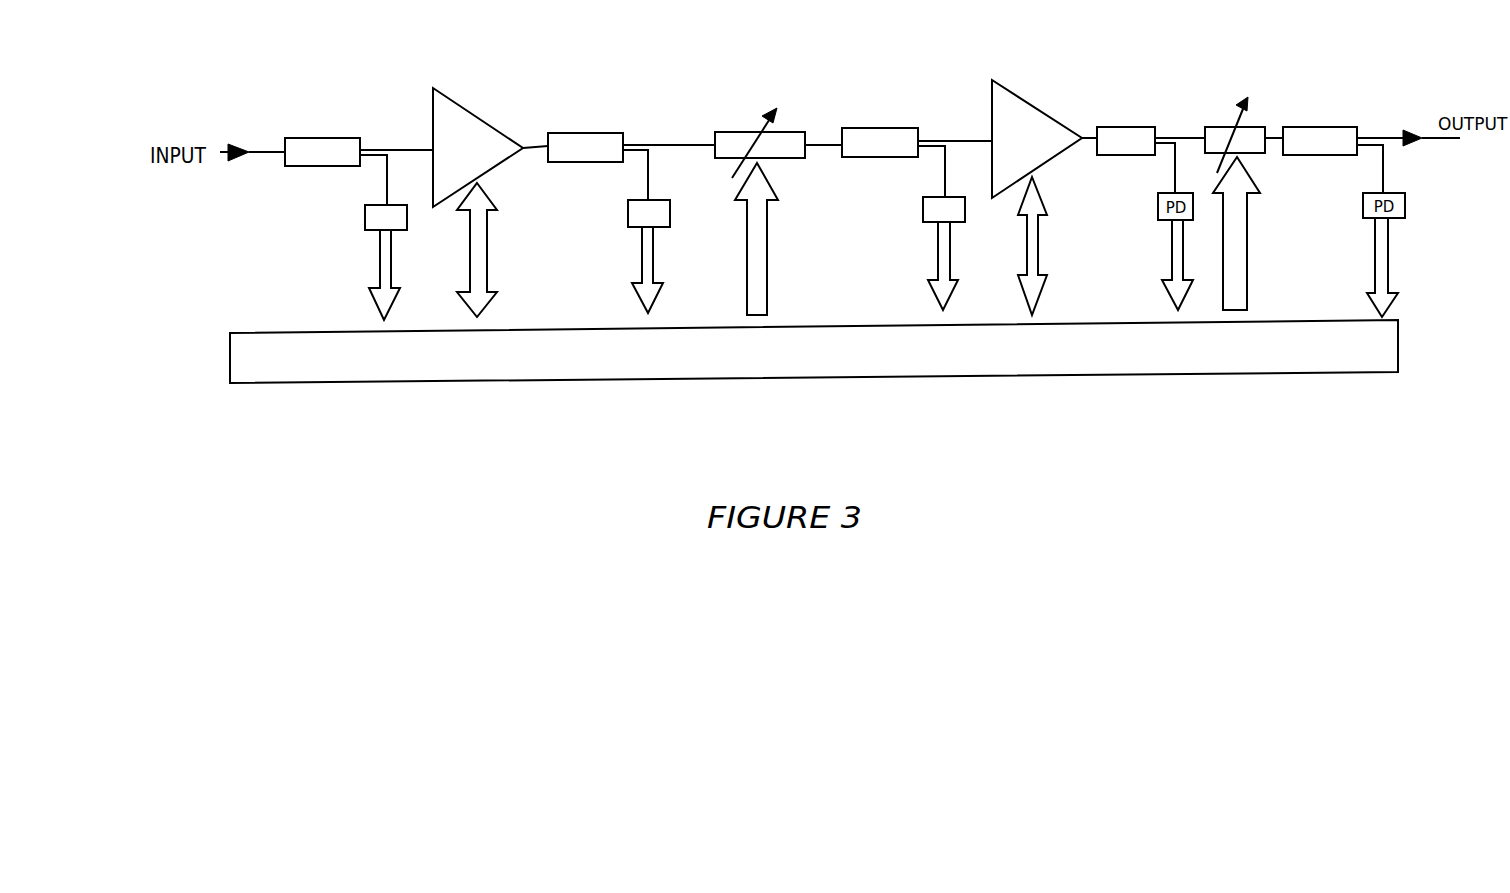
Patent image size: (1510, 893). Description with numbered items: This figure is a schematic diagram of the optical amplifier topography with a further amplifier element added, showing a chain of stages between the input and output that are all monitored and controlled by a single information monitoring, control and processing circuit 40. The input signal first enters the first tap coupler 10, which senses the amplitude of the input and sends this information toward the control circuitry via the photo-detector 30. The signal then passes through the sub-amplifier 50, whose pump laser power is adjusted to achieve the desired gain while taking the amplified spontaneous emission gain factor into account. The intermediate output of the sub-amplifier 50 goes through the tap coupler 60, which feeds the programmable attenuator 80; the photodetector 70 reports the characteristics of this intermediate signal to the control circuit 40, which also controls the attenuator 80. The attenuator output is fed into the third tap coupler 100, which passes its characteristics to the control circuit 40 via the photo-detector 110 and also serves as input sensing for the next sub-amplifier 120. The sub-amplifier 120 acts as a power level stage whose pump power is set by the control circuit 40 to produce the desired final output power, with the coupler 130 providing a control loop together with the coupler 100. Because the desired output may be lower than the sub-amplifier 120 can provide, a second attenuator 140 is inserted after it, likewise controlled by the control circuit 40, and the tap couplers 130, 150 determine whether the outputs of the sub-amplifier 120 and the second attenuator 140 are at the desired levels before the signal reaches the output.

The first tap coupler 10 is at (330, 137).
The photo-detector 30 is at (365, 217).
The central control circuit 40 is at (1050, 373).
The sub-amplifier 50 is at (457, 97).
The tap coupler 60 is at (582, 132).
The photodetector 70 is at (628, 212).
The programmable attenuator 80 is at (733, 130).
The third tap coupler 100 is at (878, 127).
The photo-detector 110 is at (923, 207).
The second sub-amplifier 120 is at (1045, 108).
The coupler 130 is at (1117, 127).
The second attenuator 140 is at (1250, 125).
The tap coupler 150 is at (1303, 125).